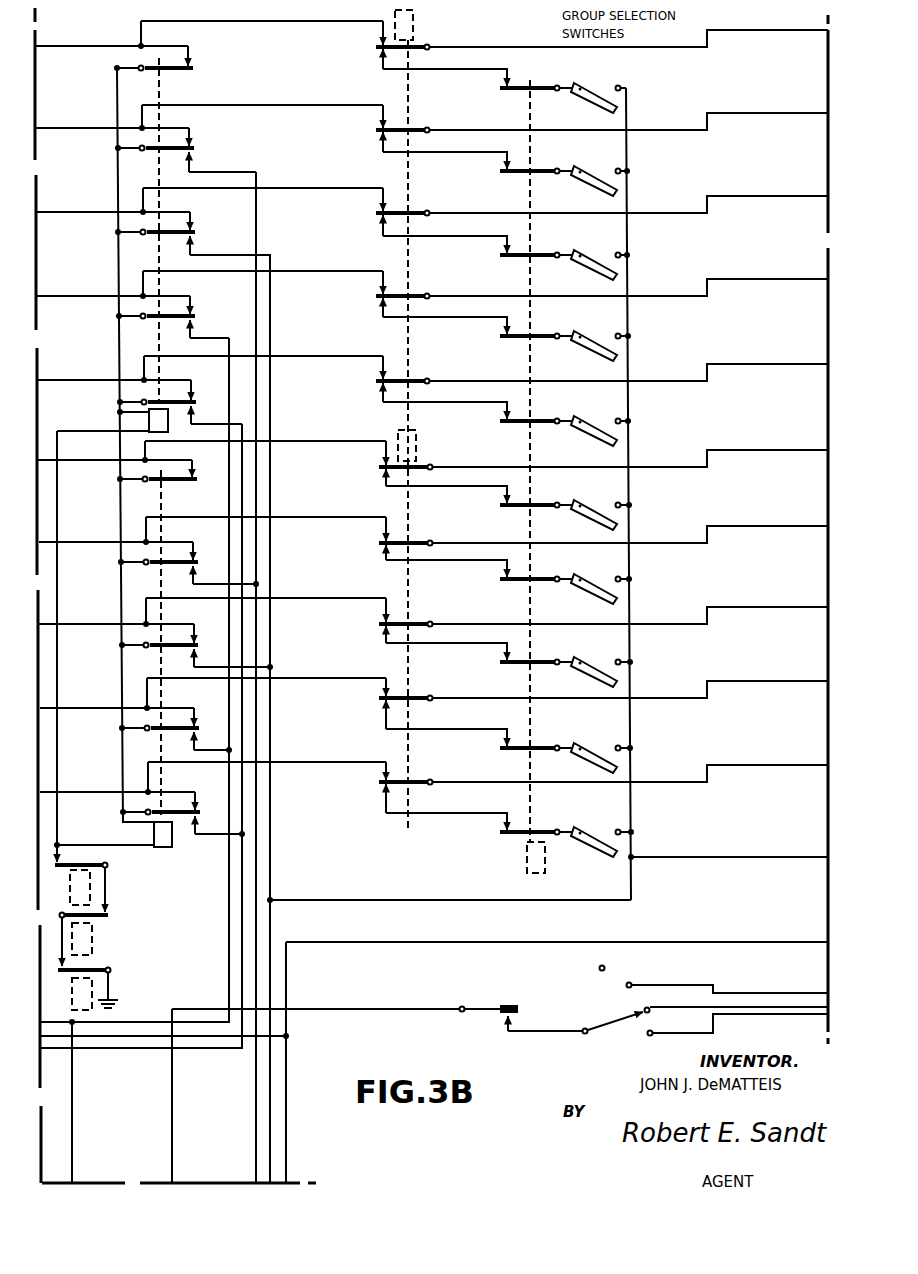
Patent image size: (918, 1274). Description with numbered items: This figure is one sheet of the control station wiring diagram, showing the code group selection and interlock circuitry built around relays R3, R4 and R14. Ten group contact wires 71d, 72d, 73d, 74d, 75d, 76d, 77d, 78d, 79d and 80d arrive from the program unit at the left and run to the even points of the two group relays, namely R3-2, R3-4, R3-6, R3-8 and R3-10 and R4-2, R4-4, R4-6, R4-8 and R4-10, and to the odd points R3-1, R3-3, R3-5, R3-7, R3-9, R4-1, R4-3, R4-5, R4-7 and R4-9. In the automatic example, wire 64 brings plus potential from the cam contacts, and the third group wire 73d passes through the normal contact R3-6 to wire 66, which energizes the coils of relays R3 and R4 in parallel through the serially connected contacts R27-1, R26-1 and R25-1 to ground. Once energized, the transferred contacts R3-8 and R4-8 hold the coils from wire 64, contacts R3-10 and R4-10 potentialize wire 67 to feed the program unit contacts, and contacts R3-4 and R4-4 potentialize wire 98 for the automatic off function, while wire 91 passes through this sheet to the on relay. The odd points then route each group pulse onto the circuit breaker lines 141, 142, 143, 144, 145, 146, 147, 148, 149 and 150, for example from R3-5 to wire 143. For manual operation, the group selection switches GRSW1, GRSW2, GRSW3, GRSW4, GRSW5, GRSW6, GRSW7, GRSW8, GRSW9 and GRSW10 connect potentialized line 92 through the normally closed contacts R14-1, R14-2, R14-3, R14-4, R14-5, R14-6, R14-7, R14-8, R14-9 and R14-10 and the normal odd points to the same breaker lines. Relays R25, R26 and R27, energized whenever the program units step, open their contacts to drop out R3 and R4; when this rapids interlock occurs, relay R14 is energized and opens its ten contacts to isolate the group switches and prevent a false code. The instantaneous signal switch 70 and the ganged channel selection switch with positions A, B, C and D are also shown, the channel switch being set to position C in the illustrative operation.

The group contact wire 71d is at (77, 44).
The group contact wire 72d is at (78, 126).
The group contact wire 73d is at (78, 210).
The group contact wire 74d is at (79, 294).
The group contact wire 75d is at (83, 380).
The group contact wire 76d is at (101, 459).
The group contact wire 77d is at (103, 541).
The group contact wire 78d is at (103, 623).
The group contact wire 79d is at (103, 707).
The group contact wire 80d is at (103, 791).
The circuit breaker line 141 is at (790, 29).
The circuit breaker line 142 is at (790, 112).
The circuit breaker line 143 is at (796, 194).
The circuit breaker line 144 is at (796, 277).
The circuit breaker line 145 is at (796, 362).
The circuit breaker line 146 is at (796, 448).
The circuit breaker line 147 is at (796, 524).
The circuit breaker line 148 is at (796, 605).
The circuit breaker line 149 is at (796, 679).
The circuit breaker line 150 is at (796, 763).
The relay R3 is at (414, 28).
The relay R4 is at (172, 834).
The relay R14 is at (527, 862).
The relay R3 contact R3-1 is at (383, 45).
The relay R3 contact R3-2 is at (191, 67).
The relay R3 contact R3-3 is at (380, 127).
The relay R3 contact R3-4 is at (193, 150).
The relay R3 contact R3-5 is at (381, 215).
The relay R3 contact R3-6 is at (191, 238).
The relay R3 contact R3-7 is at (376, 301).
The relay R3 contact R3-8 is at (191, 318).
The relay R3 contact R3-9 is at (377, 388).
The relay R3 contact R3-10 is at (213, 378).
The relay R4 contact R4-1 is at (378, 473).
The relay R4 contact R4-2 is at (205, 472).
The relay R4 contact R4-3 is at (378, 547).
The relay R4 contact R4-4 is at (212, 535).
The relay R4 contact R4-5 is at (378, 628).
The relay R4 contact R4-6 is at (212, 618).
The relay R4 contact R4-7 is at (378, 702).
The relay R4 contact R4-8 is at (212, 701).
The relay R4 contact R4-9 is at (378, 786).
The relay R4 contact R4-10 is at (218, 786).
The relay R14 contact R14-1 is at (506, 87).
The relay R14 contact R14-2 is at (506, 170).
The relay R14 contact R14-3 is at (506, 254).
The relay R14 contact R14-4 is at (505, 338).
The relay R14 contact R14-5 is at (504, 414).
The relay R14 contact R14-6 is at (506, 504).
The relay R14 contact R14-7 is at (502, 581).
The relay R14 contact R14-8 is at (504, 666).
The relay R14 contact R14-9 is at (502, 752).
The relay R14 contact R14-10 is at (500, 835).
The group selection switch GRSW1 is at (593, 89).
The group selection switch GRSW2 is at (595, 172).
The group selection switch GRSW3 is at (595, 256).
The group selection switch GRSW4 is at (595, 337).
The group selection switch GRSW5 is at (595, 422).
The group selection switch GRSW6 is at (596, 506).
The group selection switch GRSW7 is at (596, 580).
The group selection switch GRSW8 is at (596, 663).
The group selection switch GRSW9 is at (596, 749).
The group selection switch GRSW10 is at (597, 833).
The relay R27 contact R27-1 is at (68, 862).
The relay R27 is at (90, 889).
The relay R26 contact R26-1 is at (125, 915).
The relay R26 is at (92, 941).
The relay R25 contact R25-1 is at (68, 965).
The relay R25 is at (92, 994).
The wire 64 is at (229, 495).
The wire 66 is at (120, 512).
The wire 67 is at (242, 432).
The instantaneous signal switch 70 is at (496, 1014).
The wire 91 is at (228, 1042).
The wire 92 is at (270, 316).
The wire 98 is at (256, 232).
The channel selection switch position A is at (608, 960).
The channel selection switch position B is at (728, 979).
The channel selection switch position C is at (737, 1001).
The channel selection switch position D is at (738, 1023).